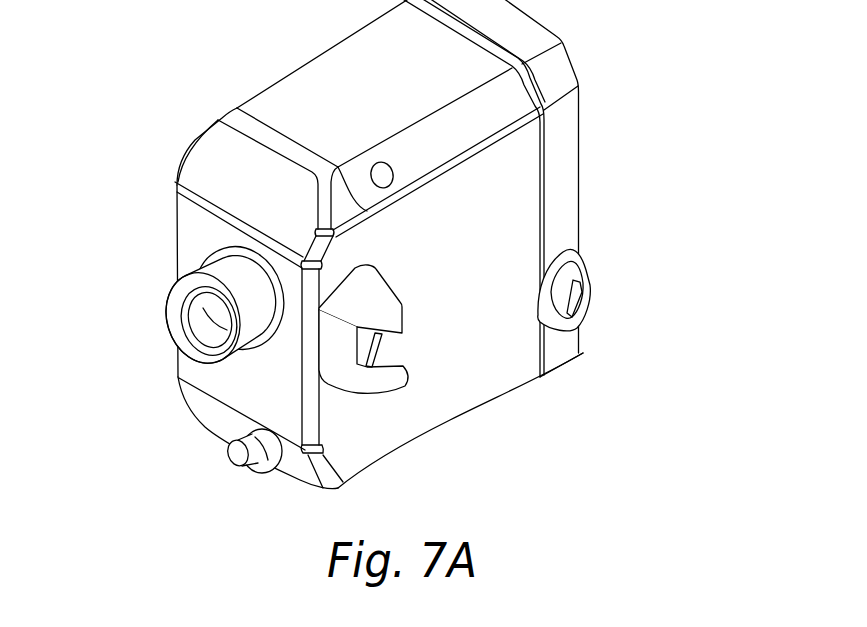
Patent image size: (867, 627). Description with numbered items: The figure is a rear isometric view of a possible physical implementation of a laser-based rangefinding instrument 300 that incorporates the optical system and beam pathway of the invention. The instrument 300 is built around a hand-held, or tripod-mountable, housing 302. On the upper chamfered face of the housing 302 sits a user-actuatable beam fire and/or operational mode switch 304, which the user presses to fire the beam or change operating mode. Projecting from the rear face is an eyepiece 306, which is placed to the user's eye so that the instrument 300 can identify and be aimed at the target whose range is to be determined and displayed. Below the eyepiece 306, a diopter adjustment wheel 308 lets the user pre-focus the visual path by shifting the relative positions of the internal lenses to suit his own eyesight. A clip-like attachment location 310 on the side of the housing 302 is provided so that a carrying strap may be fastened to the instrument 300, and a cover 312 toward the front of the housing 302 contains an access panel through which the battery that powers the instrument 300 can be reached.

The laser-based rangefinding instrument 300 is at (577, 463).
The housing 302 is at (317, 57).
The beam fire and/or operational mode switch 304 is at (388, 178).
The eyepiece 306 is at (122, 336).
The diopter adjustment wheel 308 is at (230, 453).
The strap attachment location 310 is at (383, 350).
The cover 312 is at (581, 202).